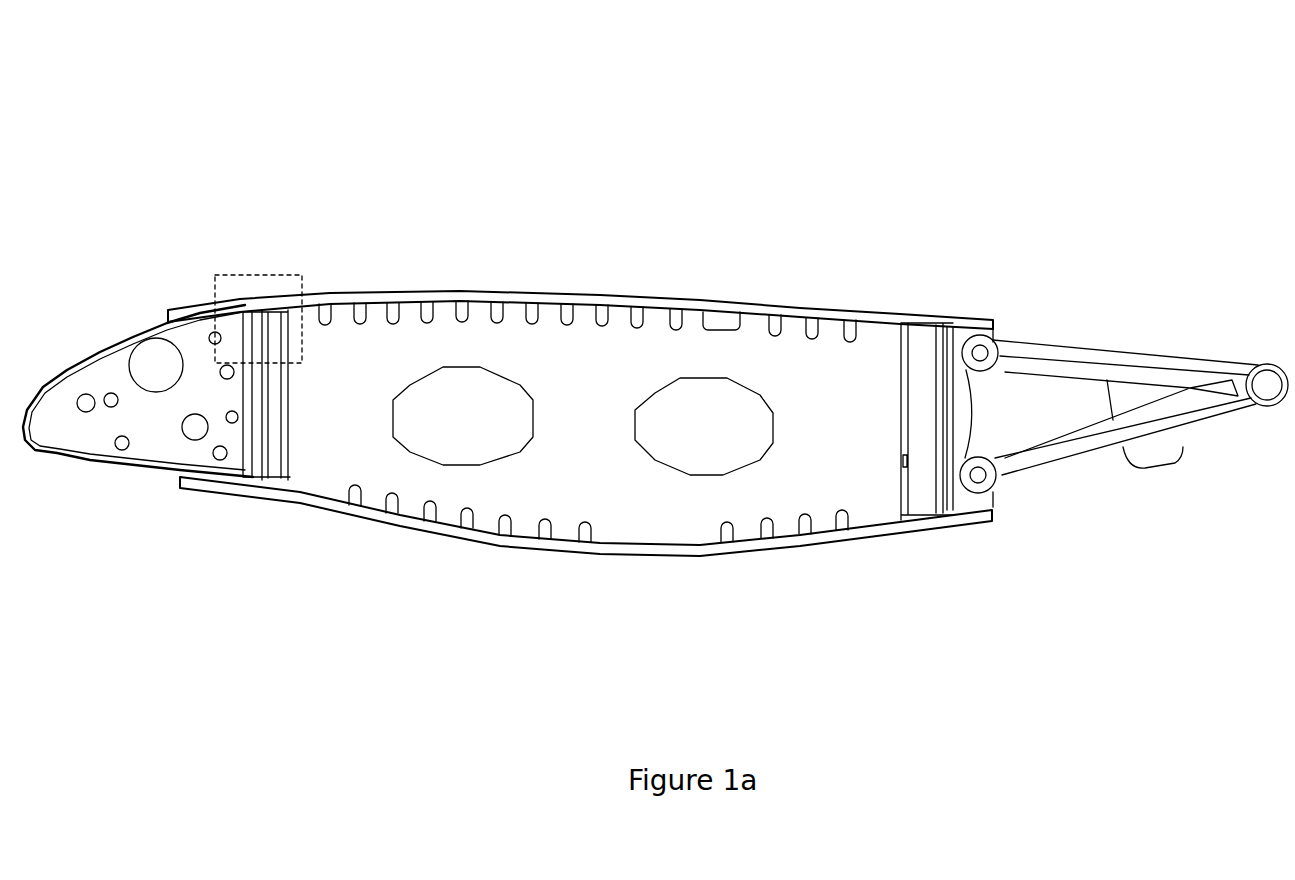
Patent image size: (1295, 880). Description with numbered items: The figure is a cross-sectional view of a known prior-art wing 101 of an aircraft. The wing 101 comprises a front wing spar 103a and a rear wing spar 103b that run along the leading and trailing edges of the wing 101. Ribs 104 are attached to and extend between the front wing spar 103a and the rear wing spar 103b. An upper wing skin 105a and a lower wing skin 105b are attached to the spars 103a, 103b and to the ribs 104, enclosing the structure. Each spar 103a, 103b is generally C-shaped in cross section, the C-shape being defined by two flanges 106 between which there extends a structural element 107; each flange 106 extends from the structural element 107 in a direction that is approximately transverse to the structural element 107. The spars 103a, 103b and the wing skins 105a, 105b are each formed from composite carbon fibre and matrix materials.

The wing 101 is at (680, 237).
The front wing spar 103a is at (257, 443).
The rear wing spar 103b is at (925, 453).
The rib 104 is at (352, 337).
The upper wing skin 105a is at (473, 292).
The lower wing skin 105b is at (485, 530).
The flange 106 is at (930, 323).
The structural element 107 is at (987, 482).